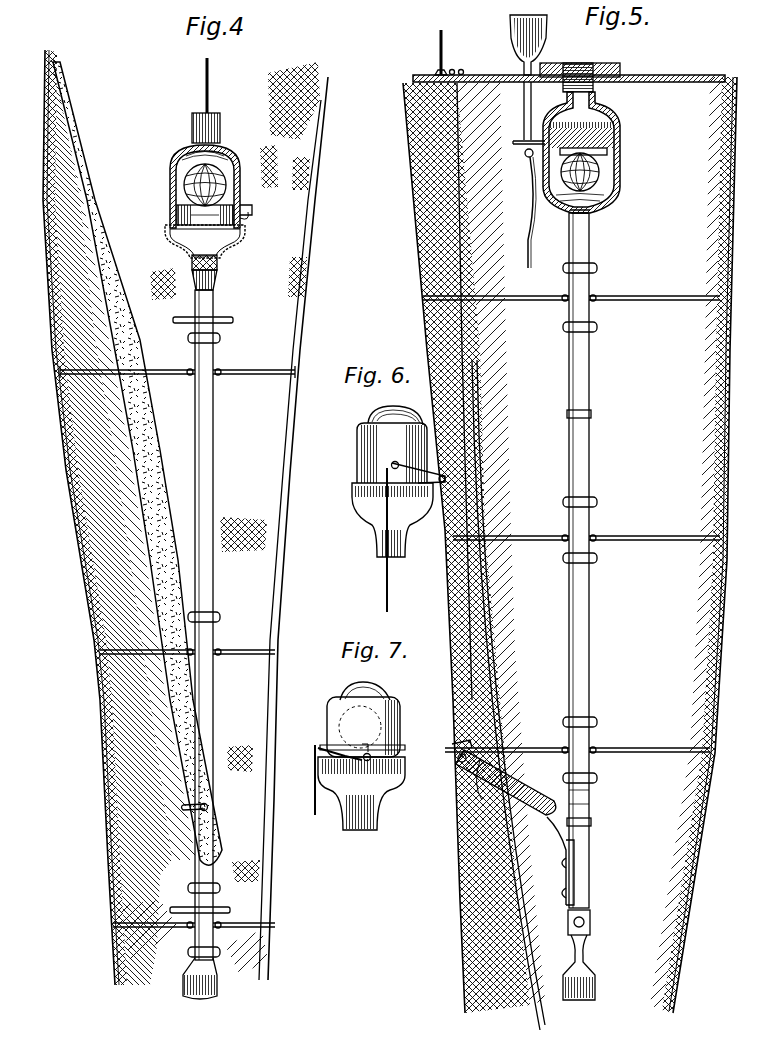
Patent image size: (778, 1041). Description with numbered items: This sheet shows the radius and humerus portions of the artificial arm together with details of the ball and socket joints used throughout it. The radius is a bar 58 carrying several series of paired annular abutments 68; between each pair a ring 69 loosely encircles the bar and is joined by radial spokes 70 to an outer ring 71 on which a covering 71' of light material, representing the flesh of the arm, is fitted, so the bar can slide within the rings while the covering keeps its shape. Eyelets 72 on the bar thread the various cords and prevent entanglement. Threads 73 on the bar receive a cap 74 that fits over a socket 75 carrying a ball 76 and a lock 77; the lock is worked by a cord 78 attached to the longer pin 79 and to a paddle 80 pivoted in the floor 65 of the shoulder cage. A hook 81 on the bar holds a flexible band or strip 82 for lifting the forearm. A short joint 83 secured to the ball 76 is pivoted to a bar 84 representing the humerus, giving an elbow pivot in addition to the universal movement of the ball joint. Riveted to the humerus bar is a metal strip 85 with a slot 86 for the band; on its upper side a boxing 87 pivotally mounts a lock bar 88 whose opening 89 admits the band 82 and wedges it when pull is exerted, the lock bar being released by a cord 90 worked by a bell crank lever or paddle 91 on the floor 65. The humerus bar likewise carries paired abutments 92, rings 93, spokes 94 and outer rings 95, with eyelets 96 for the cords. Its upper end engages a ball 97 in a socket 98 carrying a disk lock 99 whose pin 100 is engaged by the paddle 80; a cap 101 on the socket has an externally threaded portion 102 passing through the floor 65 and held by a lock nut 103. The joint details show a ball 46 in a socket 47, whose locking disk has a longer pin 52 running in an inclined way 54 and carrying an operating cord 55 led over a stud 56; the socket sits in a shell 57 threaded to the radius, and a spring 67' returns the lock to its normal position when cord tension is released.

In FIG. 6, the ball 46 is at (372, 420).
In FIG. 7, the ball 46 is at (372, 688).
In FIG. 6, the socket 47 is at (392, 453).
In FIG. 7, the socket 47 is at (363, 727).
In FIG. 6, the longer pin 52 is at (440, 472).
In FIG. 7, the longer pin 52 is at (365, 762).
In FIG. 6, the inclined way 54 is at (434, 498).
In FIG. 7, the inclined way 54 is at (328, 745).
In FIG. 6, the operating cord 55 is at (390, 577).
In FIG. 7, the operating cord 55 is at (314, 782).
In FIG. 7, the stud 56 is at (318, 749).
In FIG. 7, the shell 57 is at (378, 826).
In FIG. 4, the radius bar 58 is at (214, 446).
In FIG. 5, the floor of shoulder cage 65 is at (569, 67).
In FIG. 7, the spring 67' is at (416, 728).
In FIG. 4, the annular abutments 68 is at (221, 338).
In FIG. 4, the ring 69 is at (190, 378).
In FIG. 4, the radial spokes 70 is at (240, 378).
In FIG. 4, the outer ring 71 is at (177, 635).
In FIG. 4, the covering 71' is at (177, 426).
In FIG. 4, the eyelets 72 is at (230, 318).
In FIG. 4, the threads 73 is at (218, 262).
In FIG. 4, the cap 74 is at (246, 236).
In FIG. 4, the socket 75 is at (205, 242).
In FIG. 4, the ball 76 is at (226, 158).
In FIG. 4, the lock 77 is at (178, 212).
In FIG. 4, the cord 78 is at (210, 85).
In FIG. 5, the cord 78 is at (528, 231).
In FIG. 4, the longer pin 79 is at (254, 216).
In FIG. 5, the paddle 80 is at (516, 111).
In FIG. 4, the hook 81 is at (190, 810).
In FIG. 4, the band or strip 82 is at (212, 736).
In FIG. 5, the band or strip 82 is at (518, 879).
In FIG. 4, the short joint 83 is at (222, 126).
In FIG. 5, the short joint 83 is at (592, 972).
In FIG. 5, the humerus bar 84 is at (590, 696).
In FIG. 5, the strip of metal 85 is at (576, 856).
In FIG. 5, the slot 86 is at (462, 798).
In FIG. 5, the boxing 87 is at (590, 798).
In FIG. 5, the lock bar 88 is at (512, 786).
In FIG. 5, the opening 89 is at (470, 755).
In FIG. 5, the cord 90 is at (462, 191).
In FIG. 5, the bell crank lever or paddle 91 is at (444, 46).
In FIG. 5, the abutments 92 is at (598, 269).
In FIG. 5, the ring 93 is at (565, 304).
In FIG. 5, the radial spokes 94 is at (650, 301).
In FIG. 5, the outer ring 95 is at (718, 306).
In FIG. 5, the eyelets 96 is at (592, 414).
In FIG. 5, the ball 97 is at (595, 211).
In FIG. 5, the socket 98 is at (618, 171).
In FIG. 5, the disk lock 99 is at (610, 152).
In FIG. 5, the pin 100 is at (516, 143).
In FIG. 5, the cap 101 is at (621, 122).
In FIG. 5, the externally threaded portion 102 is at (595, 88).
In FIG. 5, the lock nut 103 is at (615, 68).